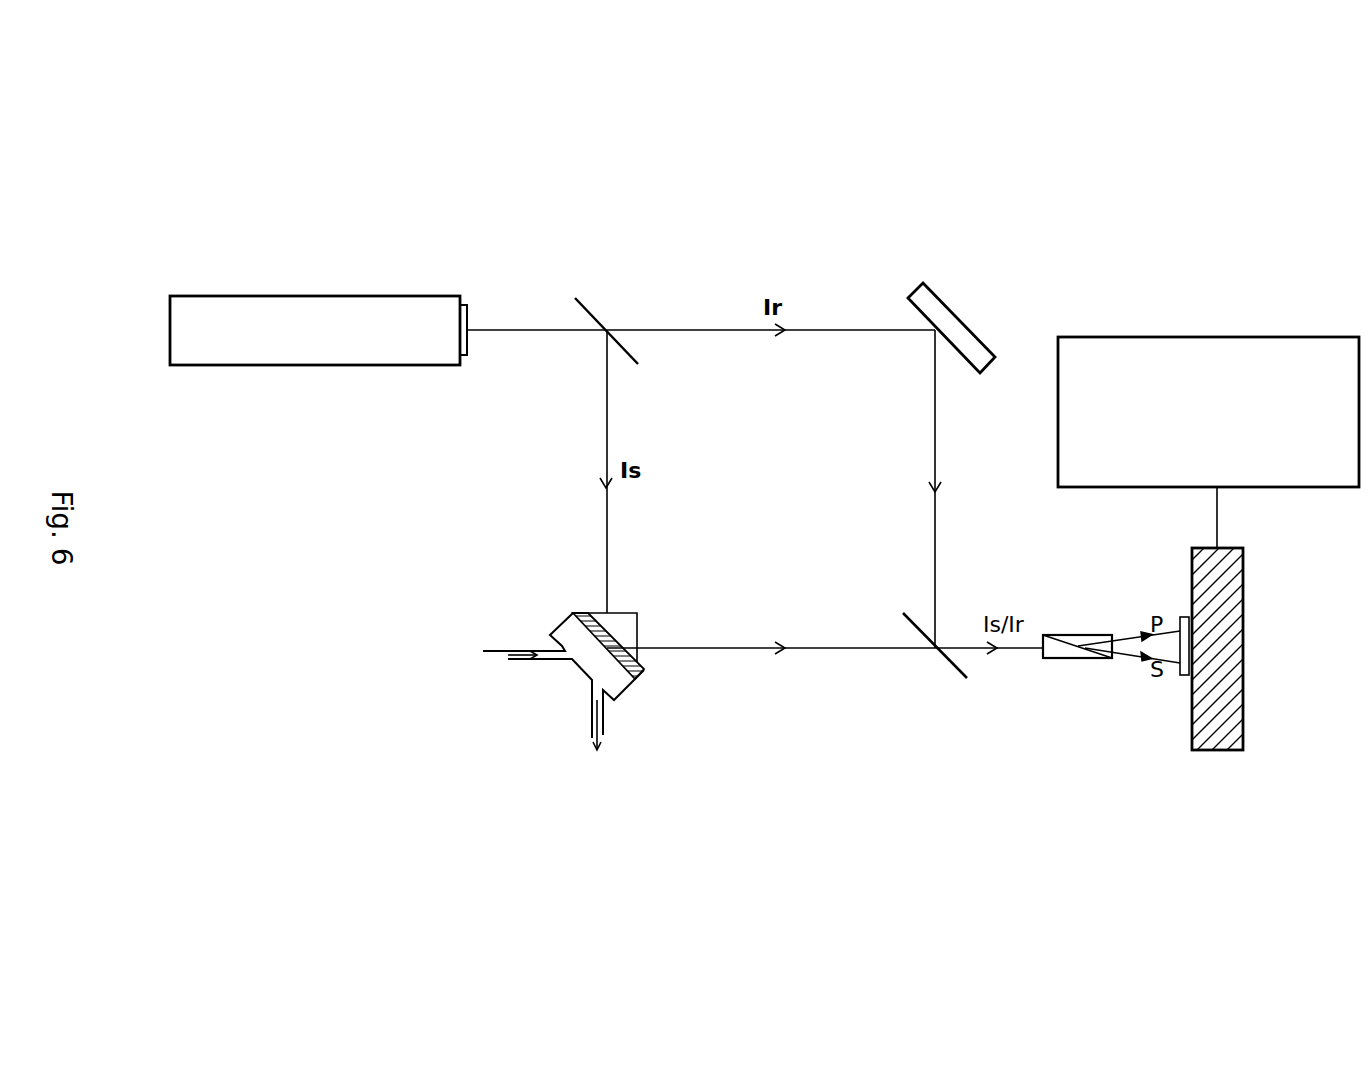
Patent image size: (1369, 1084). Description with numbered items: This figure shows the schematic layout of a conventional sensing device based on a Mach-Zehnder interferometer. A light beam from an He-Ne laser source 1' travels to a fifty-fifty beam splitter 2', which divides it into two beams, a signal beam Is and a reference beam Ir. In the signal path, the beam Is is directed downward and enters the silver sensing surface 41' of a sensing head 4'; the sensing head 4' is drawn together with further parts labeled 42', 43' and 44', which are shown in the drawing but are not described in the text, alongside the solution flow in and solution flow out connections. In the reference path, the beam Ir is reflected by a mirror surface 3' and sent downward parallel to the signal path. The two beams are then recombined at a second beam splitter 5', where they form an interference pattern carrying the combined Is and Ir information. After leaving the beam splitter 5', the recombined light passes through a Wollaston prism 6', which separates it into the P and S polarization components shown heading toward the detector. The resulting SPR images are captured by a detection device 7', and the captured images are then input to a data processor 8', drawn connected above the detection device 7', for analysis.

The He-Ne laser source 1' is at (318, 285).
The 50:50 beam splitter 2' is at (614, 296).
The mirror surface 3' is at (953, 289).
The sensing head 4' is at (532, 660).
The silver sensing surface 41' is at (654, 644).
The cell inlet housing 42' is at (617, 652).
The cell outlet housing 43' is at (664, 711).
The solution flow channel 44' is at (550, 706).
The beam splitter 5' is at (931, 686).
The Wollaston prism 6' is at (1103, 691).
The detection device 7' is at (1190, 663).
The data processor 8' is at (1208, 442).